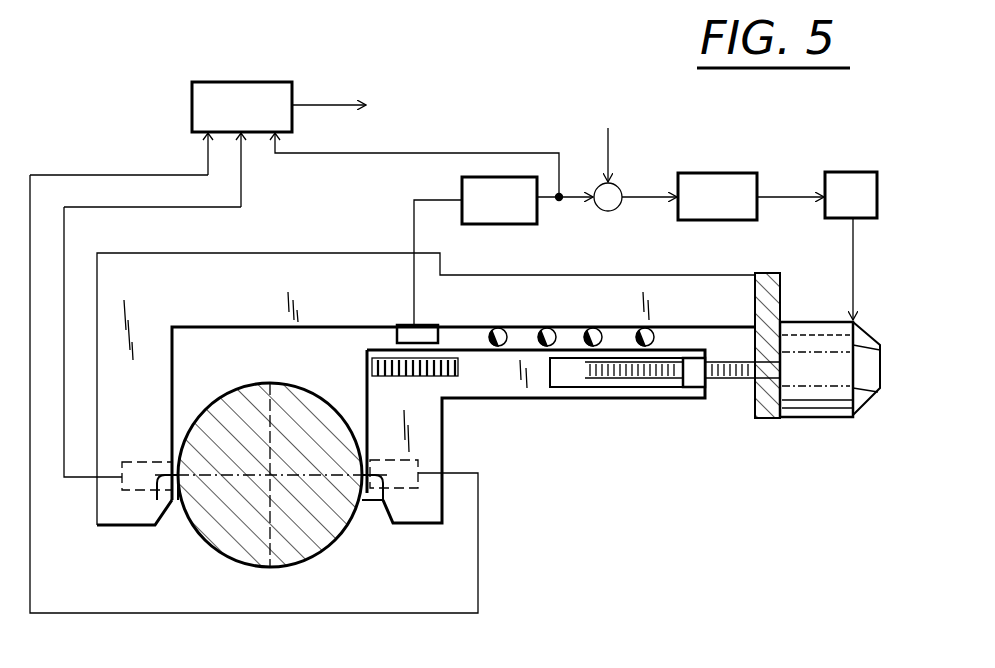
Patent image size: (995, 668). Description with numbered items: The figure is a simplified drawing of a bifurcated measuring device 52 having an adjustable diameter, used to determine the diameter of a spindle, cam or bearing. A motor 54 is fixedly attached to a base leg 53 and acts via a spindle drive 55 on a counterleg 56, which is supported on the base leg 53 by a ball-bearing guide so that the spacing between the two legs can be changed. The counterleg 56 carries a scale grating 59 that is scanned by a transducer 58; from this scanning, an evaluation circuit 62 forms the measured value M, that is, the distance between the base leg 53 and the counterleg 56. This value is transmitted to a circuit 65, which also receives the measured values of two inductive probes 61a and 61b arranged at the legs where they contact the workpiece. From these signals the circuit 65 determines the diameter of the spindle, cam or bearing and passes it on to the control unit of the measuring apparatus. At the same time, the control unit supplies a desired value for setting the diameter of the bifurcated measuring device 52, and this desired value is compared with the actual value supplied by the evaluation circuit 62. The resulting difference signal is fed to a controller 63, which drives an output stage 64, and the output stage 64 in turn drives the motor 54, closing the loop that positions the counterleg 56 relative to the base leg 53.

The bifurcated measuring device 52 is at (122, 132).
The base leg 53 is at (277, 262).
The motor 54 is at (843, 418).
The spindle drive 55 is at (722, 380).
The counterleg 56 is at (514, 372).
The transducer 58 is at (398, 330).
The scale grating 59 is at (368, 370).
The inductive probe 61a is at (165, 518).
The inductive probe 61b is at (378, 518).
The evaluation circuit 62 is at (485, 224).
The controller 63 is at (722, 176).
The output stage 64 is at (842, 173).
The circuit 65 is at (278, 92).